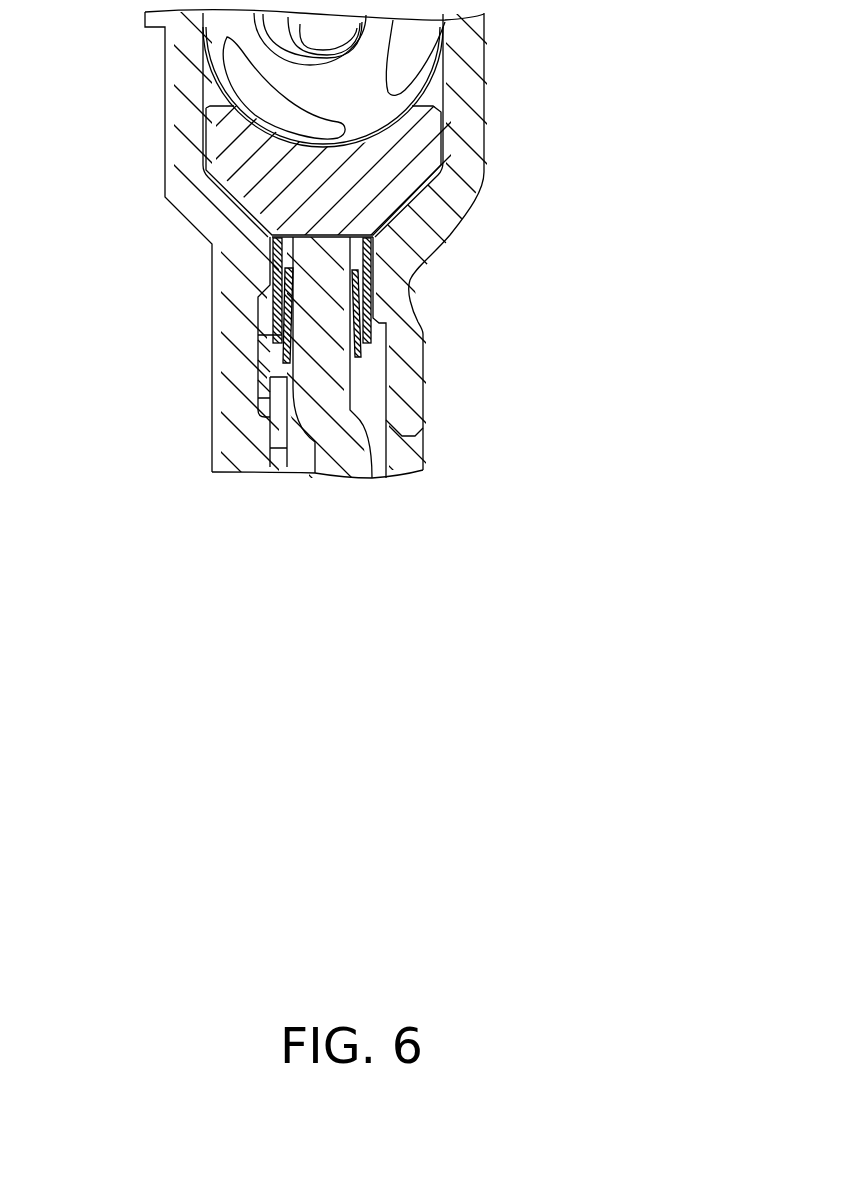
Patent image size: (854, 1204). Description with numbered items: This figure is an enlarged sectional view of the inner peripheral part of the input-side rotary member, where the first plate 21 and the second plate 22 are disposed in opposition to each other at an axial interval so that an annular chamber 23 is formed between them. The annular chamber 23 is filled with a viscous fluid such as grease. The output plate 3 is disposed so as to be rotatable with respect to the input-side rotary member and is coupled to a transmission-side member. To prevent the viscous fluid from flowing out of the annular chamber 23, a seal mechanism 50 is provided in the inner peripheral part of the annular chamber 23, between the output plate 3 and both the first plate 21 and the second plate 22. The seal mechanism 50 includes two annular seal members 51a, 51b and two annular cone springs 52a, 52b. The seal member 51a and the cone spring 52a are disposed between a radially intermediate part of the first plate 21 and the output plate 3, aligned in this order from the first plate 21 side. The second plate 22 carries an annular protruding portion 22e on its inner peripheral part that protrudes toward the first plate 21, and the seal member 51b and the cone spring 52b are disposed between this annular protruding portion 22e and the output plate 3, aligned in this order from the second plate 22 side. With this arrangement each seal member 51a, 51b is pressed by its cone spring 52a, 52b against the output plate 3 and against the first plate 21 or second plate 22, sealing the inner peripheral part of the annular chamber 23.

The first plate 21 is at (158, 121).
The second plate 22 is at (427, 250).
The annular protruding portion 22e is at (387, 290).
The annular chamber 23 is at (443, 117).
The seal mechanism 50 is at (354, 230).
The seal member 51a is at (270, 283).
The seal member 51b is at (371, 250).
The cone spring 52a is at (260, 357).
The cone spring 52b is at (363, 347).
The output plate 3 is at (347, 427).